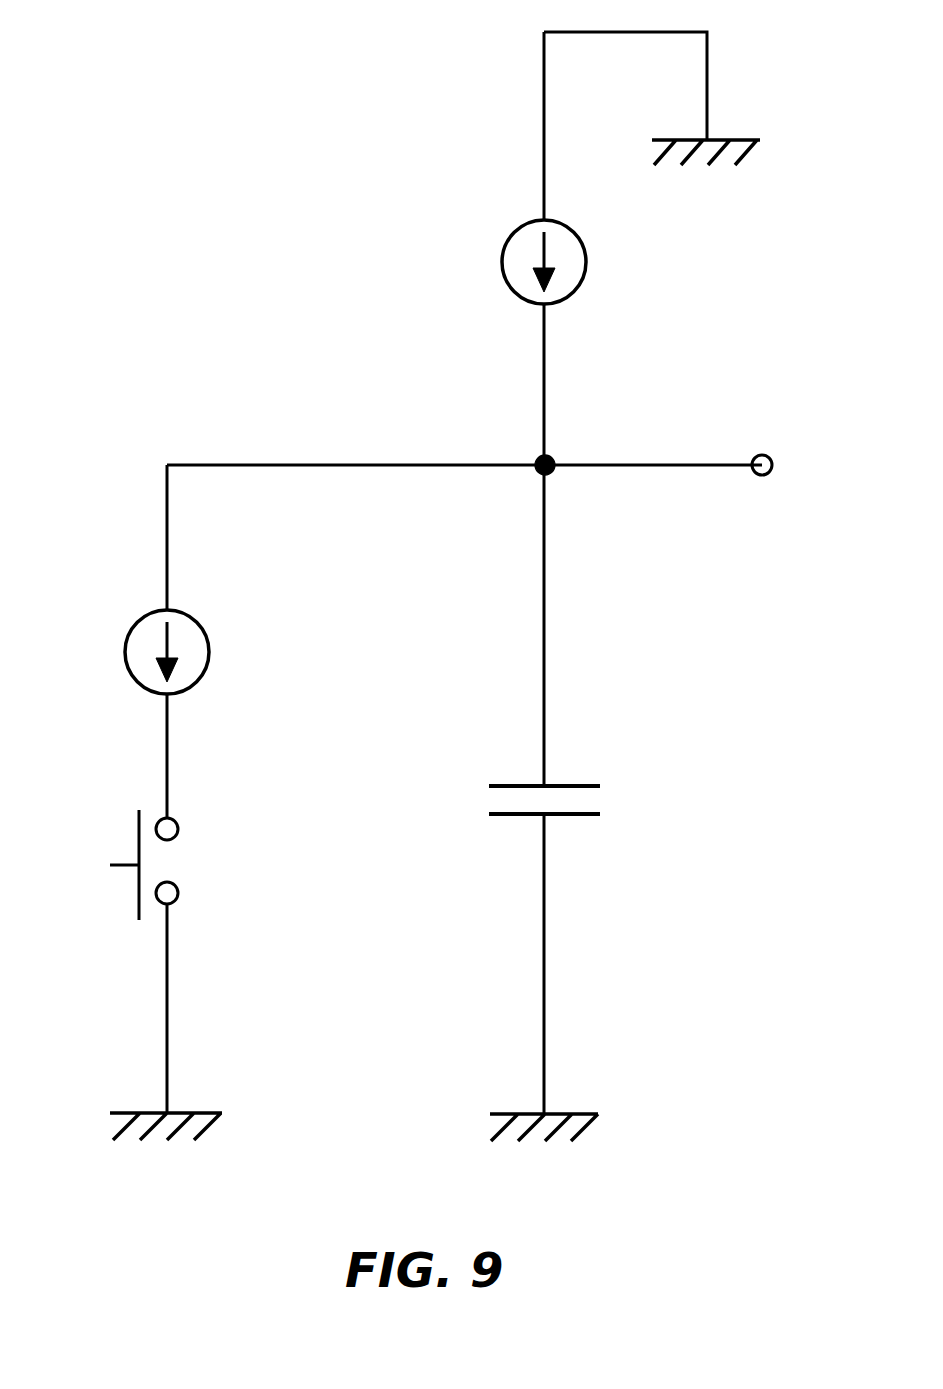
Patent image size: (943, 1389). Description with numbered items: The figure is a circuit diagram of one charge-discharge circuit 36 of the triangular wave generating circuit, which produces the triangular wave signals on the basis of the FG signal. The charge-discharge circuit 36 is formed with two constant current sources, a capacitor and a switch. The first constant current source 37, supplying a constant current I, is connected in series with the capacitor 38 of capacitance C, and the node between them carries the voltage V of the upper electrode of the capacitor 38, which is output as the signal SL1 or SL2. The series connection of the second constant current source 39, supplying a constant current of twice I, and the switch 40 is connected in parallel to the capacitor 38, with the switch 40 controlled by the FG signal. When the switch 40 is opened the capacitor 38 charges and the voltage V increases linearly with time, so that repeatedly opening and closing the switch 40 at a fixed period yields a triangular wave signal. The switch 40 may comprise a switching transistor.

The charge-discharge circuit 36 is at (190, 318).
The first constant current source 37 is at (565, 243).
The capacitor 38 is at (557, 798).
The second constant current source 39 is at (152, 622).
The switch 40 is at (139, 893).